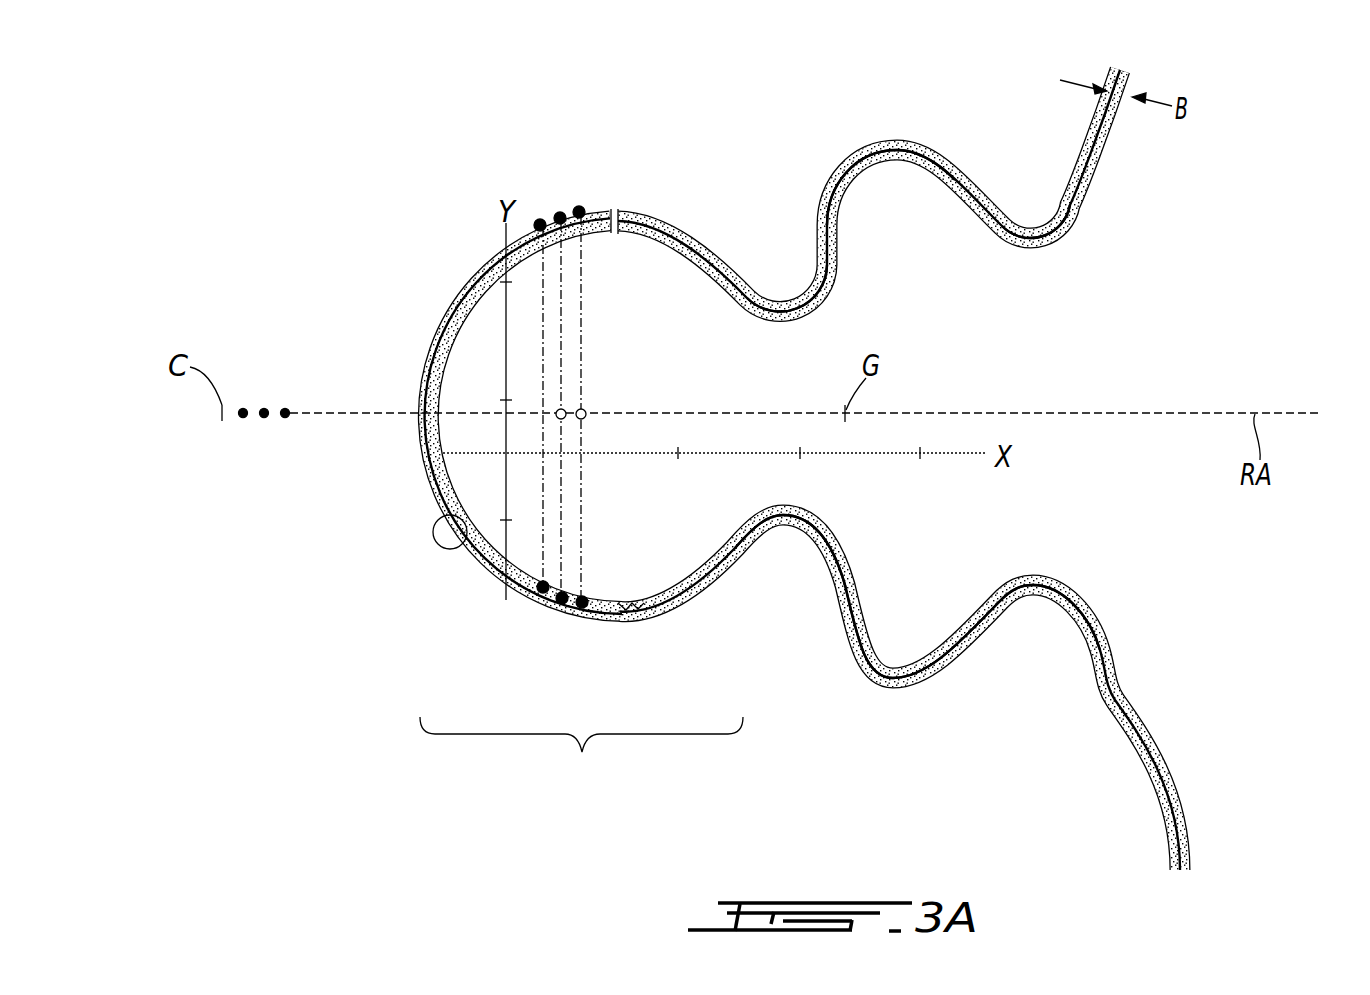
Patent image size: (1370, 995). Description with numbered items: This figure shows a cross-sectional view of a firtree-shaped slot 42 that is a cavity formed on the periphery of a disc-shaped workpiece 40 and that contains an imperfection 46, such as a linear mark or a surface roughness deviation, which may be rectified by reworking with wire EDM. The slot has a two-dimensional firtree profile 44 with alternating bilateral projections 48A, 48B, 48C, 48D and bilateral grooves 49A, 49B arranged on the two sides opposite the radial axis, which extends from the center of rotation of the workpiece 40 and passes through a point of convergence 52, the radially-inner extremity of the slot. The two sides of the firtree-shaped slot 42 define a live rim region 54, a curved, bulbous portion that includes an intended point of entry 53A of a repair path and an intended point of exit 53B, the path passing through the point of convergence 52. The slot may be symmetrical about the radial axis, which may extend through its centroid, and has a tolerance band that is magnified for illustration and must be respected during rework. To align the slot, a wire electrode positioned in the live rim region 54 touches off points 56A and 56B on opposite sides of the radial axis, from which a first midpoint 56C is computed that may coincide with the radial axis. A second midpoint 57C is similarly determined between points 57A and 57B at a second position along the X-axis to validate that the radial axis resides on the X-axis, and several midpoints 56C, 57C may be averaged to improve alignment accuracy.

The disc-shaped workpiece 40 is at (817, 760).
The firtree-shaped slot 42 is at (1180, 298).
The two-dimensional firtree profile 44 is at (470, 272).
The imperfection 46 is at (440, 534).
The bilateral projection 48A is at (785, 306).
The bilateral projection 48B is at (1042, 225).
The bilateral projection 48C is at (782, 522).
The bilateral projection 48D is at (1025, 594).
The bilateral groove 49A is at (897, 183).
The bilateral groove 49B is at (902, 632).
The point of convergence 52 is at (424, 450).
The intended point of entry 53A is at (652, 620).
The intended point of exit 53B is at (620, 211).
The live rim region 54 is at (581, 754).
The point 56A is at (579, 210).
The point 56B is at (589, 614).
The first midpoint 56C is at (586, 413).
The point 57A is at (560, 214).
The point 57B is at (556, 612).
The second midpoint 57C is at (557, 411).